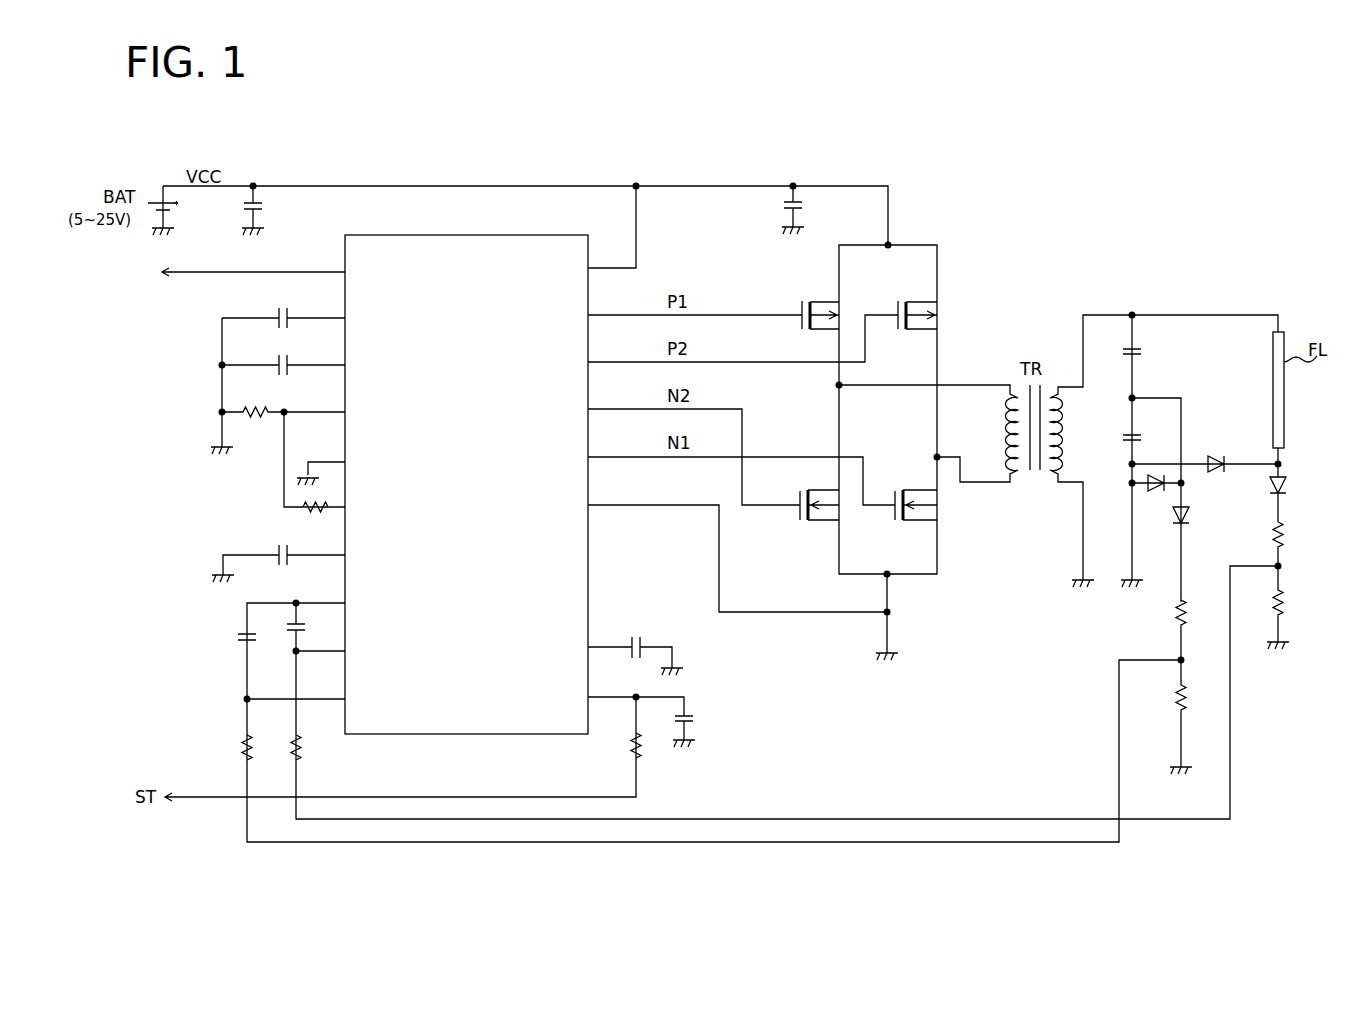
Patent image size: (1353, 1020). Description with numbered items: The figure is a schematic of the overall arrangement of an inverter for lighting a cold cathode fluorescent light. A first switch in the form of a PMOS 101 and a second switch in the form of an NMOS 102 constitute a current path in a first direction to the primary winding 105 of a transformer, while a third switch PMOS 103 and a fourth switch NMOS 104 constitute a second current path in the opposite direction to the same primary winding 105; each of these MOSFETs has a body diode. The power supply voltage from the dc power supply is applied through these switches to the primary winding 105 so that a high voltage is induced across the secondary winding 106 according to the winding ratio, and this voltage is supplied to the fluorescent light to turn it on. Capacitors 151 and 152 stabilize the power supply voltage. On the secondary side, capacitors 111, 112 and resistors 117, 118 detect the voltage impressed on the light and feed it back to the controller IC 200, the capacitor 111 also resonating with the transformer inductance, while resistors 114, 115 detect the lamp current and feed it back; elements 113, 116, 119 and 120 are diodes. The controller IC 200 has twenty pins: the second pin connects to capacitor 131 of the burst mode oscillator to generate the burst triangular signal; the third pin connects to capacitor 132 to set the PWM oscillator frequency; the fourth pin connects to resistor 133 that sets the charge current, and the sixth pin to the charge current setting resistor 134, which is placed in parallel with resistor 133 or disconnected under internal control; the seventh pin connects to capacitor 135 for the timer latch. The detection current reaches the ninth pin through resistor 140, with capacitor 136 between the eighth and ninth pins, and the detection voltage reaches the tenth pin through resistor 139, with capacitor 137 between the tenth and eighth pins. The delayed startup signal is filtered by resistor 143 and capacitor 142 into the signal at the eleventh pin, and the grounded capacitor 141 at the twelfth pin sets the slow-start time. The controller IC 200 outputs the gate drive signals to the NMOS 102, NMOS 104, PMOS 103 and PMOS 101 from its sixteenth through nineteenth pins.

The P-type MOSFET (first switch) 101 is at (713, 299).
The N-type MOSFET (second switch) 102 is at (762, 505).
The P-type MOSFET (third switch) 103 is at (762, 315).
The N-type MOSFET (fourth switch) 104 is at (713, 481).
The primary winding 105 is at (928, 433).
The secondary winding 106 is at (1091, 451).
The capacitor 111 is at (1151, 351).
The capacitor 112 is at (1146, 425).
The diode 113 is at (1296, 498).
The resistor 114 is at (1297, 544).
The resistor 115 is at (1294, 607).
The diode 116 is at (1200, 514).
The resistor 117 is at (1202, 642).
The resistor 118 is at (1199, 729).
The diode 119 is at (1205, 451).
The diode 120 is at (1156, 494).
The capacitor (burst mode oscillator capacitor) 131 is at (283, 306).
The capacitor (PWM oscillator capacitor) 132 is at (283, 353).
The resistor 133 is at (283, 399).
The charge current setting resistor 134 is at (324, 520).
The capacitor (timer latch capacitor) 135 is at (278, 552).
The capacitor 136 is at (312, 627).
The capacitor 137 is at (230, 637).
The resistor 139 is at (266, 753).
The resistor 140 is at (784, 692).
The capacitor (slow-start capacitor) 141 is at (635, 643).
The capacitor 142 is at (658, 722).
The resistor 143 is at (618, 745).
The capacitor 151 is at (274, 210).
The capacitor 152 is at (813, 210).
The controller IC 200 is at (437, 234).